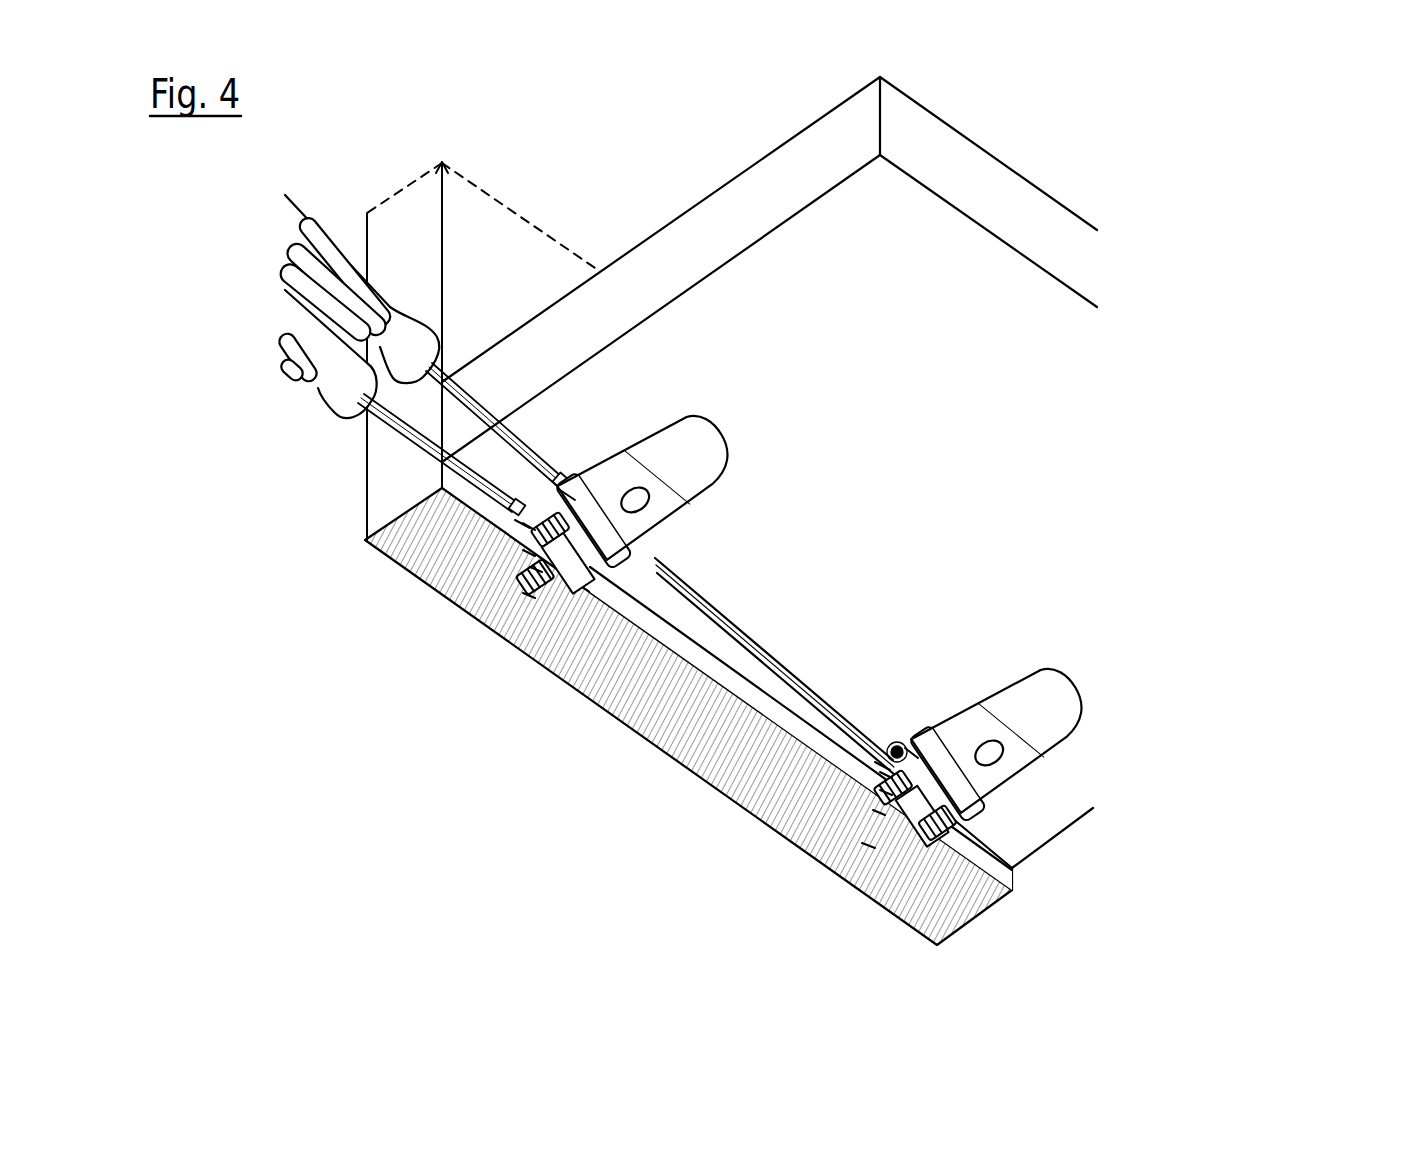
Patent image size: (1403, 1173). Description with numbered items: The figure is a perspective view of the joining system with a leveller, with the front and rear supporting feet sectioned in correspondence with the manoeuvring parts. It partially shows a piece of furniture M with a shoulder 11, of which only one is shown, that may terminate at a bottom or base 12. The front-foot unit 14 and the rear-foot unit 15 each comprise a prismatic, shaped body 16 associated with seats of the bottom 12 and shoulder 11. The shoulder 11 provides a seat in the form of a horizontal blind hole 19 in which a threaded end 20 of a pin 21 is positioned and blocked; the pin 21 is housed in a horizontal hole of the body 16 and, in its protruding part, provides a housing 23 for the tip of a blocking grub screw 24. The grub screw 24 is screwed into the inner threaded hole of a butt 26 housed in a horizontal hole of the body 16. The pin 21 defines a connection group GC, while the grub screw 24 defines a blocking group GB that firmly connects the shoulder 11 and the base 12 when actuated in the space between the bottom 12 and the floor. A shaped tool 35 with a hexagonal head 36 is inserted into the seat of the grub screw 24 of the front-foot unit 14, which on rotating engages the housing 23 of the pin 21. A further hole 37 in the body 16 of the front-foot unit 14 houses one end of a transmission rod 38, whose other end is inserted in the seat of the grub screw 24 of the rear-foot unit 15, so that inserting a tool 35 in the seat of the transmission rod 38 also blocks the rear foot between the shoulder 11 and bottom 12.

The shoulder 11 is at (420, 202).
The bottom or base 12 is at (838, 162).
The front-foot unit 14 is at (766, 474).
The rear-foot unit 15 is at (1110, 721).
The body 16 is at (723, 419).
The horizontal blind hole 19 is at (523, 593).
The threaded end 20 is at (530, 567).
The pin 21 is at (520, 548).
The housing 23 is at (880, 790).
The blocking grub screw 24 is at (515, 520).
The butt 26 is at (523, 523).
The shaped tool 35 is at (420, 359).
The hexagonal head 36 is at (556, 498).
The further hole 37 is at (560, 490).
The transmission rod 38 is at (695, 590).
The piece of furniture M is at (1191, 396).
The blocking group GB is at (510, 558).
The connection group GC is at (922, 845).